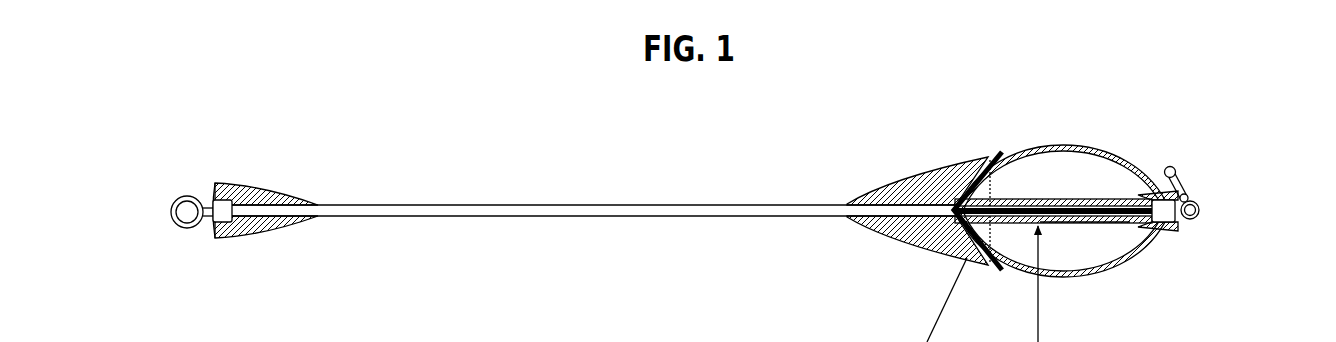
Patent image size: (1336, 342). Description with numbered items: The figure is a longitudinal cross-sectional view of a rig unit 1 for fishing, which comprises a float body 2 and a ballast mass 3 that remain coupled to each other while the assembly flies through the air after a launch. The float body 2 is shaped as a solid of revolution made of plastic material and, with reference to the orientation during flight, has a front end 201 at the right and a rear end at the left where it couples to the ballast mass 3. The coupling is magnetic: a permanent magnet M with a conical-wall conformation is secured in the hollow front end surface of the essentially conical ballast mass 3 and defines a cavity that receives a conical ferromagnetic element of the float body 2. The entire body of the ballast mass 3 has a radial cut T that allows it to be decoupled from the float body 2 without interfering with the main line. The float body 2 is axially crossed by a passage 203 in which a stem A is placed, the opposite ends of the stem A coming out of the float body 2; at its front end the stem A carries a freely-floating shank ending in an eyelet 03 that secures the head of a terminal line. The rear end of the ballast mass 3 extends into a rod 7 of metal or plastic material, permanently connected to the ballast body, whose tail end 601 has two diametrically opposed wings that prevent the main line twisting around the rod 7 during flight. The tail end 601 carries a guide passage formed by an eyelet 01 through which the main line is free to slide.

The rig unit 1 is at (620, 143).
The rod 7 is at (601, 219).
The tail end 601 is at (270, 233).
The eyelet 01 is at (176, 231).
The ballast mass 3 is at (916, 172).
The permanent magnet M is at (968, 163).
The float body 2 is at (1077, 149).
The stem A is at (1014, 198).
The passage 203 is at (1092, 226).
The front end 201 is at (1171, 239).
The eyelet 03 is at (1176, 168).
The radial cut T is at (892, 238).